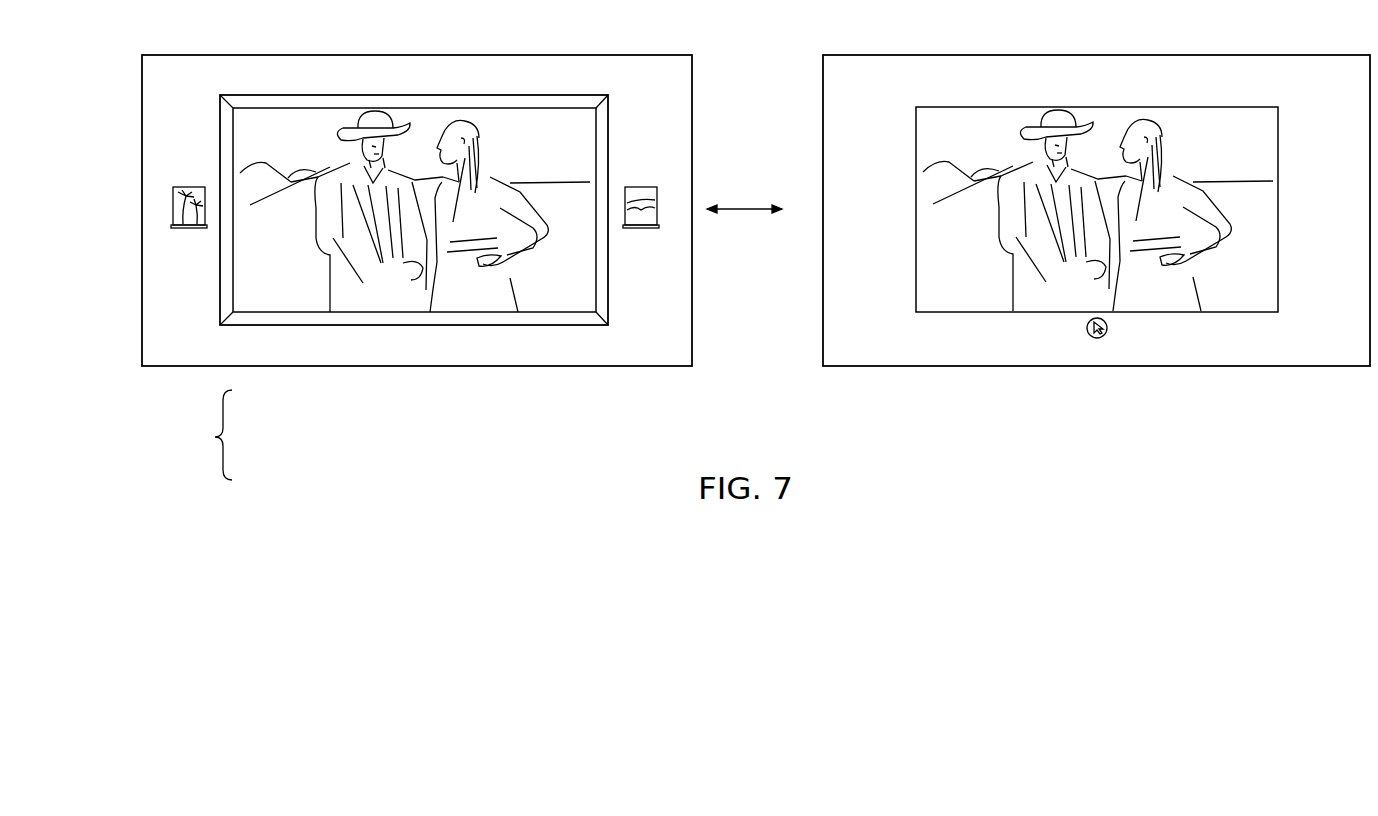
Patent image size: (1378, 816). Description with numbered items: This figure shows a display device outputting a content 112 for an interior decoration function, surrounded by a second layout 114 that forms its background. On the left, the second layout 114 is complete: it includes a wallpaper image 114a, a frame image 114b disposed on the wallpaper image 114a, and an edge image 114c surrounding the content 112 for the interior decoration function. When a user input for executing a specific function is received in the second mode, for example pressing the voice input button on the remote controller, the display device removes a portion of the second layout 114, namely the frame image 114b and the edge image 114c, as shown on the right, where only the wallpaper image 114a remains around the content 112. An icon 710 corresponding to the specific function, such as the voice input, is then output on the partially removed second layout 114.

The content for an interior decoration function 112 is at (422, 128).
The second layout 114 is at (205, 435).
The wallpaper image 114a is at (162, 130).
The frame image 114b is at (178, 212).
The edge image 114c is at (222, 162).
The icon 710 is at (1097, 340).